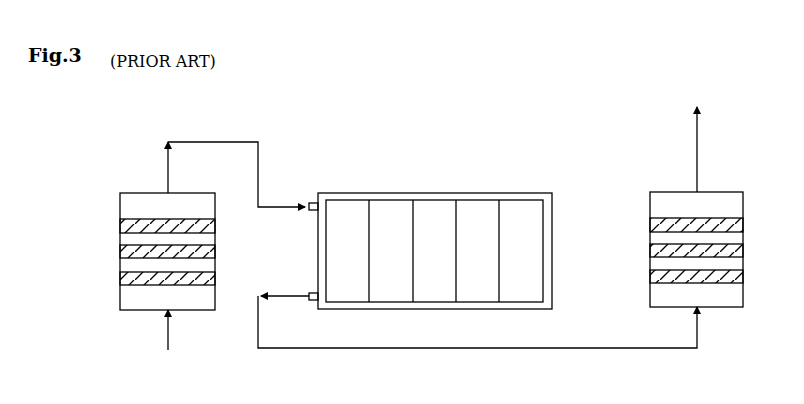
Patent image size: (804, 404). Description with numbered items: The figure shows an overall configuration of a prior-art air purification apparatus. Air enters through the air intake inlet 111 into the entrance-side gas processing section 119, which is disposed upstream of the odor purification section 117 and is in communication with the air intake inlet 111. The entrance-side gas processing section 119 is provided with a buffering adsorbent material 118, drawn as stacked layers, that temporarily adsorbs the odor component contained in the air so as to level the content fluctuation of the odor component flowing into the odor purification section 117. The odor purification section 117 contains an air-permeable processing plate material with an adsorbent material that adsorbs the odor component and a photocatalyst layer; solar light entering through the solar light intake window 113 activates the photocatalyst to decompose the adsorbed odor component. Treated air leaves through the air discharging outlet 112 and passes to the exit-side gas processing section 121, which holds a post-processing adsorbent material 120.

The air intake inlet 111 is at (318, 213).
The air discharging outlet 112 is at (318, 292).
The solar light intake window 113 is at (390, 207).
The odor purification section 117 is at (389, 164).
The buffering adsorbent material 118 is at (120, 226).
The entrance-side gas processing section 119 is at (120, 178).
The post-processing adsorbent material 120 is at (650, 225).
The exit-side gas processing section 121 is at (730, 183).